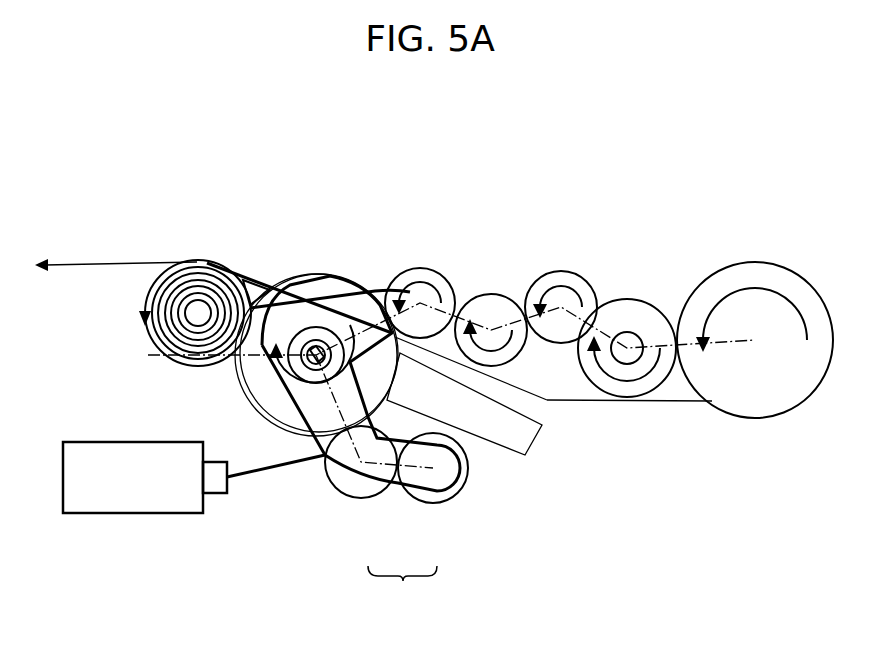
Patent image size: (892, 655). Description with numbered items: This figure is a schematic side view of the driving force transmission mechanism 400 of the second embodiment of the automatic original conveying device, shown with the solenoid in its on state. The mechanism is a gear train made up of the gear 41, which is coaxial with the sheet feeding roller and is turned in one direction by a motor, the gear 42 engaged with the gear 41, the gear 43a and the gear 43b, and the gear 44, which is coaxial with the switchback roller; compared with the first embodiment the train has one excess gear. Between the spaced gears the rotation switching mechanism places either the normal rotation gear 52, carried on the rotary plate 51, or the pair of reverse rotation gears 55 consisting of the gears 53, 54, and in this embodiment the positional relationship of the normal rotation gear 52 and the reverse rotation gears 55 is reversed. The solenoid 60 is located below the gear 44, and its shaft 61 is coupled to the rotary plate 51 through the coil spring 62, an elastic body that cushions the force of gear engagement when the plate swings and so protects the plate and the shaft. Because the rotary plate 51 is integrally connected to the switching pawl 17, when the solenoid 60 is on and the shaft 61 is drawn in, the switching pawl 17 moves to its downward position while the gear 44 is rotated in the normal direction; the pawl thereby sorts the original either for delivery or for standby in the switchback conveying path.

The driving force transmission mechanism 400 is at (610, 188).
The gear 41 is at (760, 270).
The gear 42 is at (641, 308).
The gear 43a is at (558, 275).
The gear 43b is at (489, 294).
The gear 44 is at (199, 263).
The rotary plate 51 is at (372, 294).
The normal rotation gear 52 is at (418, 270).
The gear 53 is at (432, 507).
The gear 54 is at (363, 498).
The reverse rotation gears 55 is at (402, 588).
The switching pawl 17 is at (524, 438).
The solenoid 60 is at (92, 503).
The shaft 61 is at (213, 495).
The coil spring 62 is at (268, 476).